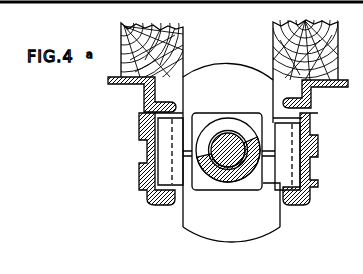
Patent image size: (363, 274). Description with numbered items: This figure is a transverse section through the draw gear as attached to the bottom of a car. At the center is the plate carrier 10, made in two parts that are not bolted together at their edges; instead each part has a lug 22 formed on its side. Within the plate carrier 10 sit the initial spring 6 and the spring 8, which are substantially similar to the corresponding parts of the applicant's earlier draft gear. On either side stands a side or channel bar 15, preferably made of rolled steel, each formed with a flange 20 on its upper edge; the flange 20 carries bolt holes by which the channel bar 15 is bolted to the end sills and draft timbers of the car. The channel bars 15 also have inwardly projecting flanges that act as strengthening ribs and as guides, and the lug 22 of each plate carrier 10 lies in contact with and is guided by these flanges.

The initial spring 6 is at (229, 151).
The spring 8 is at (228, 150).
The plate carrier 10 is at (228, 152).
The channel bar 15 is at (142, 152).
The flange 20 is at (143, 86).
The lug 22 is at (145, 152).